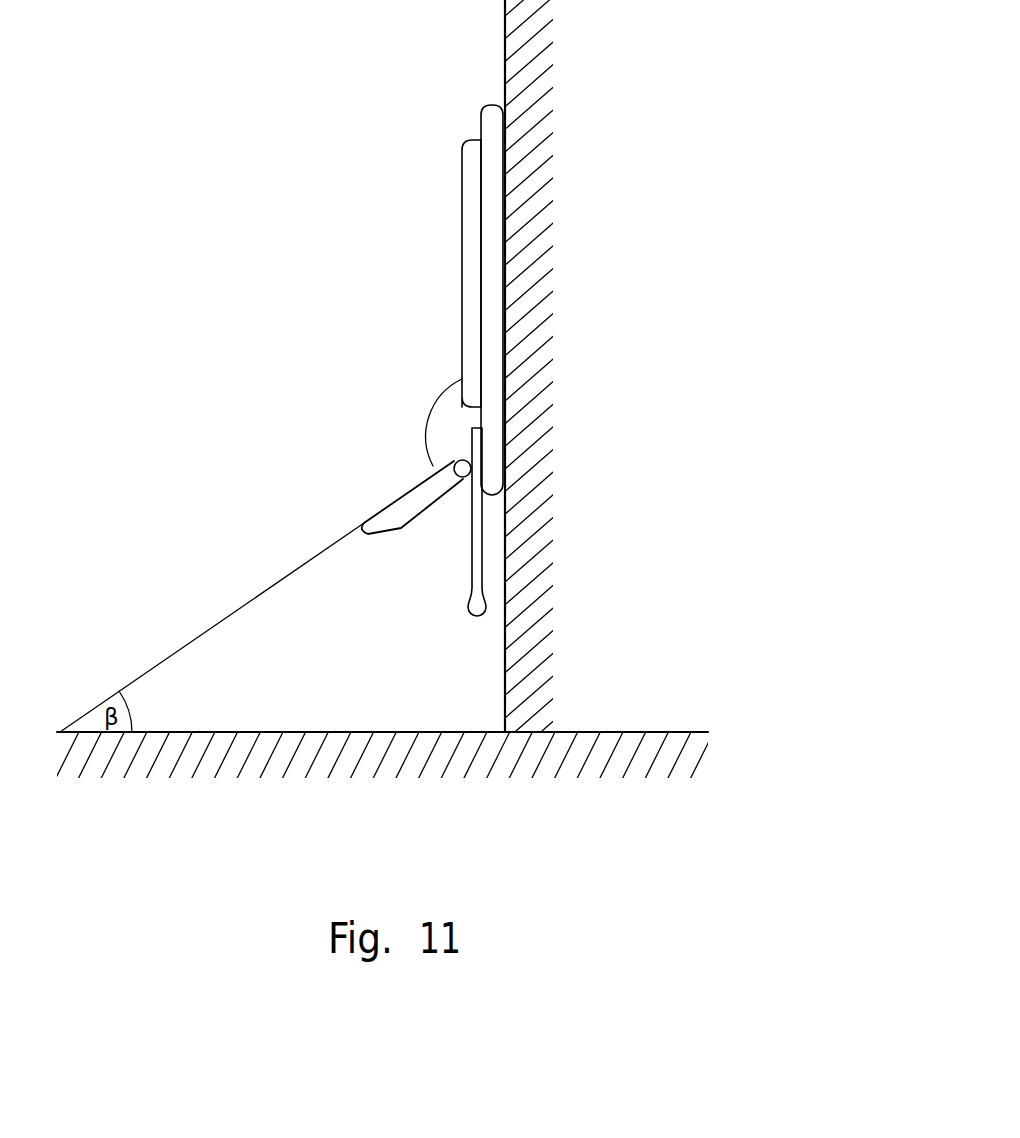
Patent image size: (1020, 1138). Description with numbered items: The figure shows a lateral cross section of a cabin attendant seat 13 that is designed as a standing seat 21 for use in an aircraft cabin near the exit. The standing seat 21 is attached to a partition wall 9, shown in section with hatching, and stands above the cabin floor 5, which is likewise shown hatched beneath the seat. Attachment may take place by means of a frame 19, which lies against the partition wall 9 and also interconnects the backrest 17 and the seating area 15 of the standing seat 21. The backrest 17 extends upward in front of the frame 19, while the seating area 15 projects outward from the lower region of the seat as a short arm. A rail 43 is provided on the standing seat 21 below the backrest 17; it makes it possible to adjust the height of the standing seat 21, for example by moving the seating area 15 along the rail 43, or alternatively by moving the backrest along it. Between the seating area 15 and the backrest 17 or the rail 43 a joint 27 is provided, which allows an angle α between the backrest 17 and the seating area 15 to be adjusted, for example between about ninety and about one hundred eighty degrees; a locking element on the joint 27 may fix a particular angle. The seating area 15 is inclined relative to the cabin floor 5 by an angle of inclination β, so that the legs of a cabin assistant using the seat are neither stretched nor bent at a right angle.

The cabin floor 5 is at (632, 732).
The partition wall 9 is at (505, 72).
The cabin attendant seat 13 is at (463, 293).
The seating area 15 is at (410, 505).
The backrest 17 is at (472, 202).
The frame 19 is at (492, 175).
The standing seat 21 is at (456, 443).
The joint 27 is at (462, 468).
The rail 43 is at (482, 557).